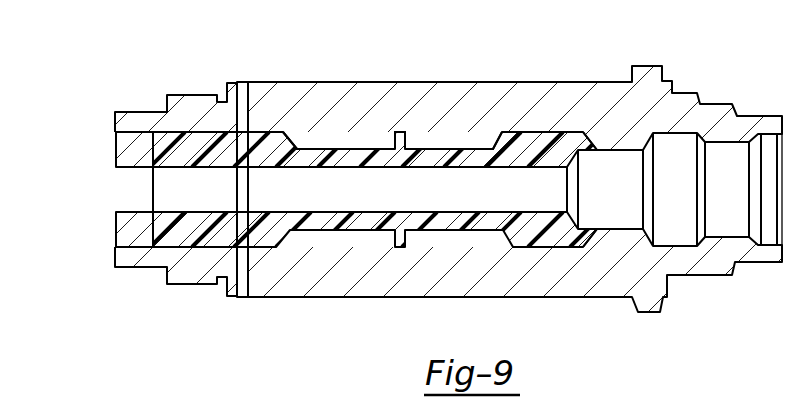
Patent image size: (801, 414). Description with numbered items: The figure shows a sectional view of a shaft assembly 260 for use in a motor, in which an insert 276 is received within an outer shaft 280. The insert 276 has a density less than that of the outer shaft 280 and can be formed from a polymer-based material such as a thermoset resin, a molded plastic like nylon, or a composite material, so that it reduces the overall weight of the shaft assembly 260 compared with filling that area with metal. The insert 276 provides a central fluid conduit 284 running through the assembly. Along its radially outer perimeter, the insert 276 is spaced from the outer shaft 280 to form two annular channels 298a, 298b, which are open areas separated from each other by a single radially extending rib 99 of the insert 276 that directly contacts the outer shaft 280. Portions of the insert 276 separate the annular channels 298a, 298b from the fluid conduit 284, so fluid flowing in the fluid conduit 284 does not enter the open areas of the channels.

The shaft assembly 260 is at (585, 42).
The outer shaft 280 is at (297, 93).
The insert 276 is at (181, 159).
The fluid conduit 284 is at (304, 216).
The annular channel 298a is at (340, 150).
The annular channel 298b is at (468, 148).
The rib 99 is at (401, 150).